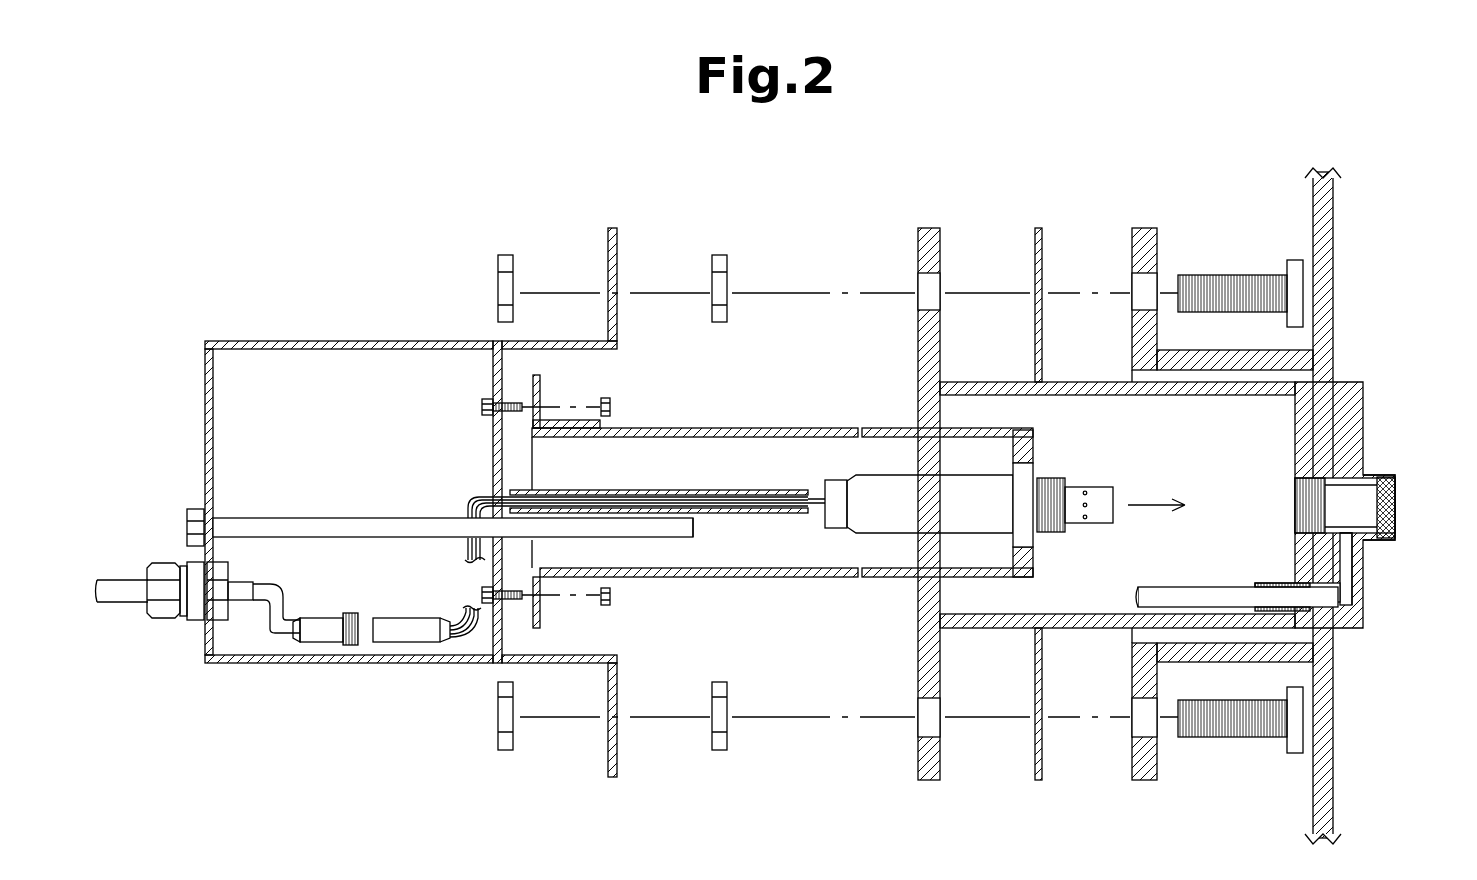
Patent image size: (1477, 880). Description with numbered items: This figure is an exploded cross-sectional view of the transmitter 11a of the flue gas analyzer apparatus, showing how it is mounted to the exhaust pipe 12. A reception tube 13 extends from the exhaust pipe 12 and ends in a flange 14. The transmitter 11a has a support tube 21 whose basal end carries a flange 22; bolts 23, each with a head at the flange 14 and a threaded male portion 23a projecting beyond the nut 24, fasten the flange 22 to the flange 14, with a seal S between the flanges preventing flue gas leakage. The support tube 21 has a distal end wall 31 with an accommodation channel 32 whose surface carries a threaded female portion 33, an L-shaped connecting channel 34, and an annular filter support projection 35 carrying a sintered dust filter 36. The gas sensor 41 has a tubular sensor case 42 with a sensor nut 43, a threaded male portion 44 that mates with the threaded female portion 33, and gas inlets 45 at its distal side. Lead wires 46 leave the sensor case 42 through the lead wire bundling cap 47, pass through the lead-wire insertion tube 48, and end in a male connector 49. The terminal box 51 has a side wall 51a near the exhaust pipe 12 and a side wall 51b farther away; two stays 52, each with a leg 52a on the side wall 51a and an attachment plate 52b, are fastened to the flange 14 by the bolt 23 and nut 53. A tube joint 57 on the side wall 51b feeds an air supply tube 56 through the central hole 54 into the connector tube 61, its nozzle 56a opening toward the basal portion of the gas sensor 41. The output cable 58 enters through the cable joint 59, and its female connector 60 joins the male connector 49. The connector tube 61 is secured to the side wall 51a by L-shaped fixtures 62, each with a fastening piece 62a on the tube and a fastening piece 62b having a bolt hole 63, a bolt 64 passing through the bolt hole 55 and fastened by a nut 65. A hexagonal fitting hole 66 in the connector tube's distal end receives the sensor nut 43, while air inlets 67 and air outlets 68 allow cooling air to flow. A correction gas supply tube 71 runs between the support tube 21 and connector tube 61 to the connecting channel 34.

The transmitter 11a is at (230, 229).
The exhaust pipe 12 is at (1333, 194).
The reception tube 13 is at (1200, 352).
The flange 14 is at (1140, 236).
The support tube 21 is at (1068, 381).
The flange 22 is at (930, 236).
The bolt 23 is at (1293, 261).
The threaded male portion 23a is at (1232, 274).
The nut 24 is at (720, 253).
The distal end wall 31 is at (1350, 411).
The accommodation channel 32 is at (1346, 478).
The threaded female portion 33 is at (1293, 492).
The connecting channel 34 is at (1355, 584).
The filter support projection 35 is at (1372, 541).
The dust filter 36 is at (1396, 507).
The gas sensor 41 is at (976, 491).
The sensor case 42 is at (945, 474).
The sensor nut 43 is at (1012, 505).
The threaded male portion 44 is at (1050, 477).
The gas inlets 45 is at (1088, 486).
The lead wires 46 is at (468, 500).
The lead wire bundling cap 47 is at (828, 483).
The lead-wire insertion tube 48 is at (675, 489).
The male connector 49 is at (400, 643).
The terminal box 51 is at (367, 327).
The side wall 51a is at (505, 548).
The side wall 51b is at (206, 405).
The stay 52 is at (613, 475).
The leg 52a is at (548, 342).
The attachment plate 52b is at (613, 230).
The nut 53 is at (505, 253).
The central hole 54 is at (536, 470).
The bolt hole 55 is at (481, 407).
The air supply tube 56 is at (328, 518).
The nozzle 56a is at (696, 534).
The tube joint 57 is at (186, 527).
The output cable 58 is at (120, 585).
The cable joint 59 is at (196, 620).
The female connector 60 is at (327, 643).
The connector tube 61 is at (782, 502).
The fixture 62 is at (612, 387).
The fastening piece 62a is at (606, 421).
The fastening piece 62b is at (543, 381).
The bolt hole 63 is at (541, 602).
The bolt 64 is at (484, 418).
The nut 65 is at (612, 597).
The fitting hole 66 is at (1032, 549).
The air inlets 67 is at (600, 438).
The air outlets 68 is at (855, 428).
The correction gas supply tube 71 is at (1215, 588).
The seal S is at (1038, 232).